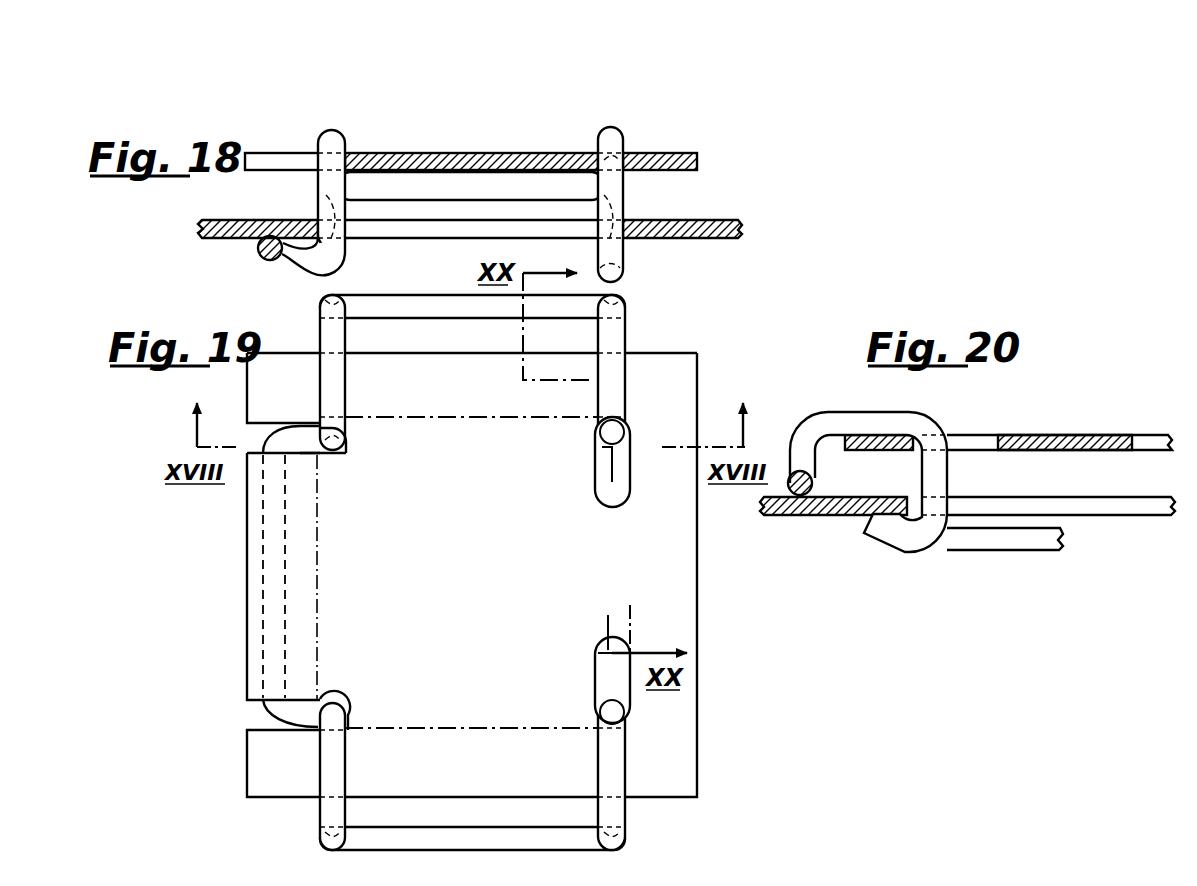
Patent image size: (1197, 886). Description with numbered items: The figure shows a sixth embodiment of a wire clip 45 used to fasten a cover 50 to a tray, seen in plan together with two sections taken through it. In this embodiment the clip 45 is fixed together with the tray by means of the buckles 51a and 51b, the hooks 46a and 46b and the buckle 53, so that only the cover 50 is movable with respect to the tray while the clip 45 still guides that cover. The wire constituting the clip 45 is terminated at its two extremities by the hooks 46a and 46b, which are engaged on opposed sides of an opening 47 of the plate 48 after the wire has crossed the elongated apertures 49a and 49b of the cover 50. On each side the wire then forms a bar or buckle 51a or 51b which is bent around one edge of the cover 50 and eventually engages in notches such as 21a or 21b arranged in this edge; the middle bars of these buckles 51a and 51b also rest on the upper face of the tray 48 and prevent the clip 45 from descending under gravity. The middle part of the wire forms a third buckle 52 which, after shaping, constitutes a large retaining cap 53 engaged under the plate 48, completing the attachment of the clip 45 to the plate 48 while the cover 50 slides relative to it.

In FIG. 18, the notch 21a is at (286, 163).
In FIG. 19, the notch 21a is at (262, 426).
In FIG. 19, the notch 21b is at (247, 698).
In FIG. 18, the clip 45 is at (628, 136).
In FIG. 19, the hook 46a is at (612, 400).
In FIG. 20, the hook 46a is at (903, 542).
In FIG. 19, the hook 46b is at (600, 745).
In FIG. 19, the opening 47 is at (455, 422).
In FIG. 20, the opening 47 is at (833, 513).
In FIG. 18, the plate 48 is at (700, 226).
In FIG. 20, the plate 48 is at (1100, 518).
In FIG. 18, the elongated aperture 49a is at (590, 157).
In FIG. 19, the elongated aperture 49a is at (595, 478).
In FIG. 20, the elongated aperture 49a is at (967, 442).
In FIG. 19, the elongated aperture 49b is at (595, 668).
In FIG. 20, the elongated aperture 49b is at (1148, 442).
In FIG. 18, the cover 50 is at (478, 156).
In FIG. 20, the cover 50 is at (1045, 438).
In FIG. 18, the buckle 51a is at (413, 208).
In FIG. 19, the buckle 51a is at (407, 308).
In FIG. 20, the buckle 51a is at (813, 485).
In FIG. 19, the buckle 51b is at (475, 830).
In FIG. 19, the third buckle 52 is at (288, 711).
In FIG. 18, the retaining cap 53 is at (260, 256).
In FIG. 19, the retaining cap 53 is at (272, 590).